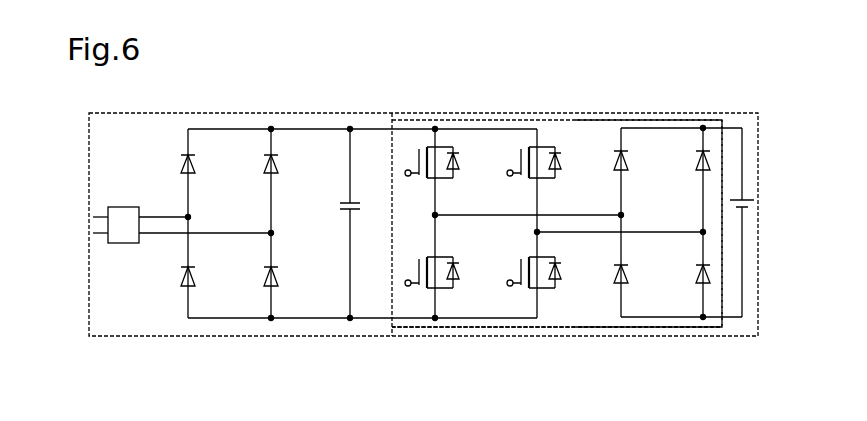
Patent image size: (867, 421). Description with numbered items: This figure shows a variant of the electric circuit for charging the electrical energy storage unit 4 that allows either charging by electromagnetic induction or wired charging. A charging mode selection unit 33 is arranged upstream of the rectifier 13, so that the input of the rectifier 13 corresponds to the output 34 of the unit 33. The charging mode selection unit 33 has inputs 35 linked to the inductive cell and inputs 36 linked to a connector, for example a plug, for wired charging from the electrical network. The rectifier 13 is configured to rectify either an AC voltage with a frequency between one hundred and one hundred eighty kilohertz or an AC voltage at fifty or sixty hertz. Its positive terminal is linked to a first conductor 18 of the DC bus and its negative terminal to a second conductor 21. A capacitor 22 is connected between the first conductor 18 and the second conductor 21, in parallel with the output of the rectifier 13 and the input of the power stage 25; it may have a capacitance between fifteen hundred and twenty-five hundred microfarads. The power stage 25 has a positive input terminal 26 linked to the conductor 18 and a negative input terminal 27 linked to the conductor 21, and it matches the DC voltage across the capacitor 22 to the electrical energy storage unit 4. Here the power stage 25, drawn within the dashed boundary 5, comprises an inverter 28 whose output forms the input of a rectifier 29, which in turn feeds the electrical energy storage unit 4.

The electrical energy storage unit 4 is at (743, 199).
The DC/DC converter unit 5 is at (497, 120).
The rectifier 13 is at (187, 110).
The first conductor 18 is at (368, 120).
The second conductor 21 is at (365, 320).
The capacitor 22 is at (346, 211).
The power stage 25 is at (573, 120).
The positive input terminal 26 is at (383, 120).
The negative input terminal 27 is at (388, 320).
The inverter 28 is at (438, 338).
The rectifier 29 is at (622, 340).
The charging mode selection unit 33 is at (130, 207).
The output 34 is at (172, 236).
The inputs 35 is at (97, 214).
The inputs 36 is at (97, 236).